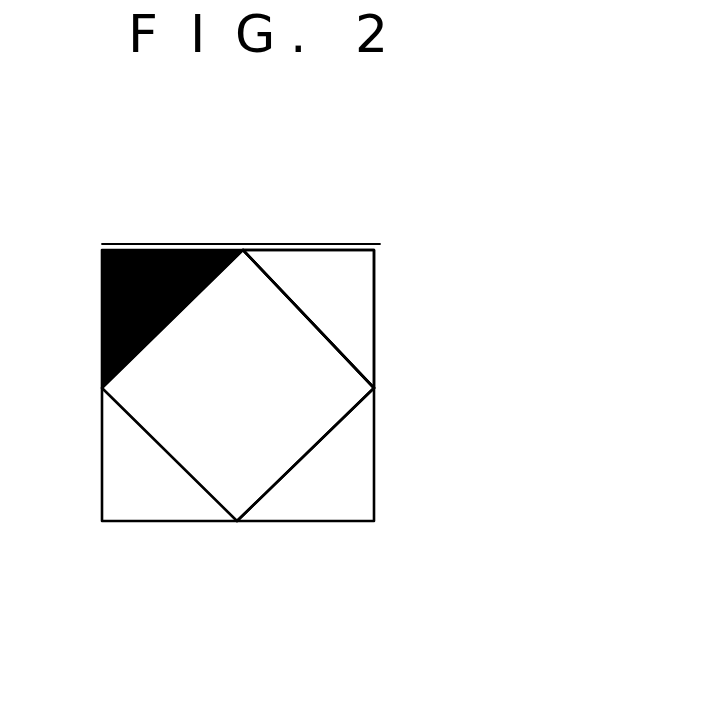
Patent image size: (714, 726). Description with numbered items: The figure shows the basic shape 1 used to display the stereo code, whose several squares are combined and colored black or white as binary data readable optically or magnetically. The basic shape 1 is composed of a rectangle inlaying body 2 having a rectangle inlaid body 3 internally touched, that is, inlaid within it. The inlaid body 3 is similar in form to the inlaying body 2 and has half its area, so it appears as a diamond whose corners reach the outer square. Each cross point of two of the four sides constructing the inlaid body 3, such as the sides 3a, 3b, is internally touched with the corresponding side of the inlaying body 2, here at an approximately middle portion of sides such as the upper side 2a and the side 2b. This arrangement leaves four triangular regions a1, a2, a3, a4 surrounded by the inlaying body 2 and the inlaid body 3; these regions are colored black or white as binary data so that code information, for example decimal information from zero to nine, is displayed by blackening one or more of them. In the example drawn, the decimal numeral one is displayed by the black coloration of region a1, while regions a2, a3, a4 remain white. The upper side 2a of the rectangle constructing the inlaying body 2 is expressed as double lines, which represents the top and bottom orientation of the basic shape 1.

The basic shape 1 is at (320, 234).
The inlaying body 2 is at (237, 244).
The upper side of rectangle 2a is at (168, 244).
The side of inlaying body 2b is at (373, 282).
The inlaid body 3 is at (347, 343).
The side of inlaid body 3a is at (357, 370).
The side of inlaid body 3b is at (330, 433).
The region a1 is at (120, 292).
The region a2 is at (350, 278).
The region a3 is at (158, 510).
The region a4 is at (327, 510).